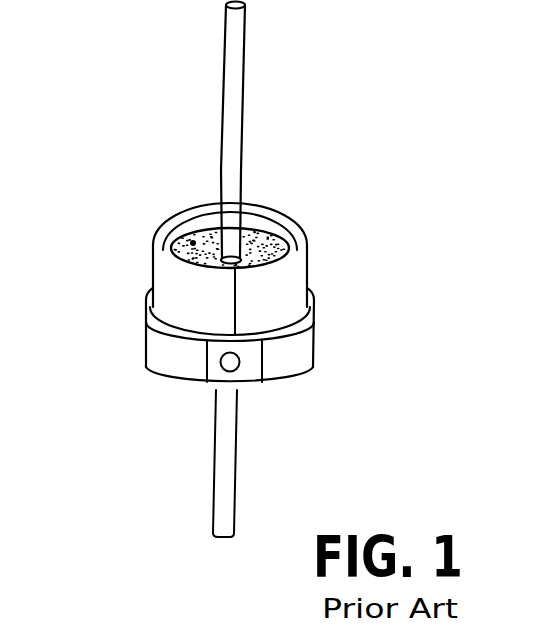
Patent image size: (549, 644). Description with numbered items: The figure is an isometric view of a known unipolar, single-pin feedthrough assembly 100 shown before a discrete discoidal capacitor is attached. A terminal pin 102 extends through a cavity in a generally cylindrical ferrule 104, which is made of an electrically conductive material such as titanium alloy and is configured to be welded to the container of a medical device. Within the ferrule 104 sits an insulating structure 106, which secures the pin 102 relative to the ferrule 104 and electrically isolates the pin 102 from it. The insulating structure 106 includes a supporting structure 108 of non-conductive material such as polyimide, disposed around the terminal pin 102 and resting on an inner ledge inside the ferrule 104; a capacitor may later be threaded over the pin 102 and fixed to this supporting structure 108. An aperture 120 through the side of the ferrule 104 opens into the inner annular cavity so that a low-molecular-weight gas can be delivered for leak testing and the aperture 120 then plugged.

The feedthrough assembly 100 is at (313, 205).
The terminal pin 102 is at (240, 50).
The ferrule 104 is at (302, 272).
The insulating structure 106 is at (170, 228).
The supporting structure 108 is at (254, 241).
The aperture 120 is at (236, 369).